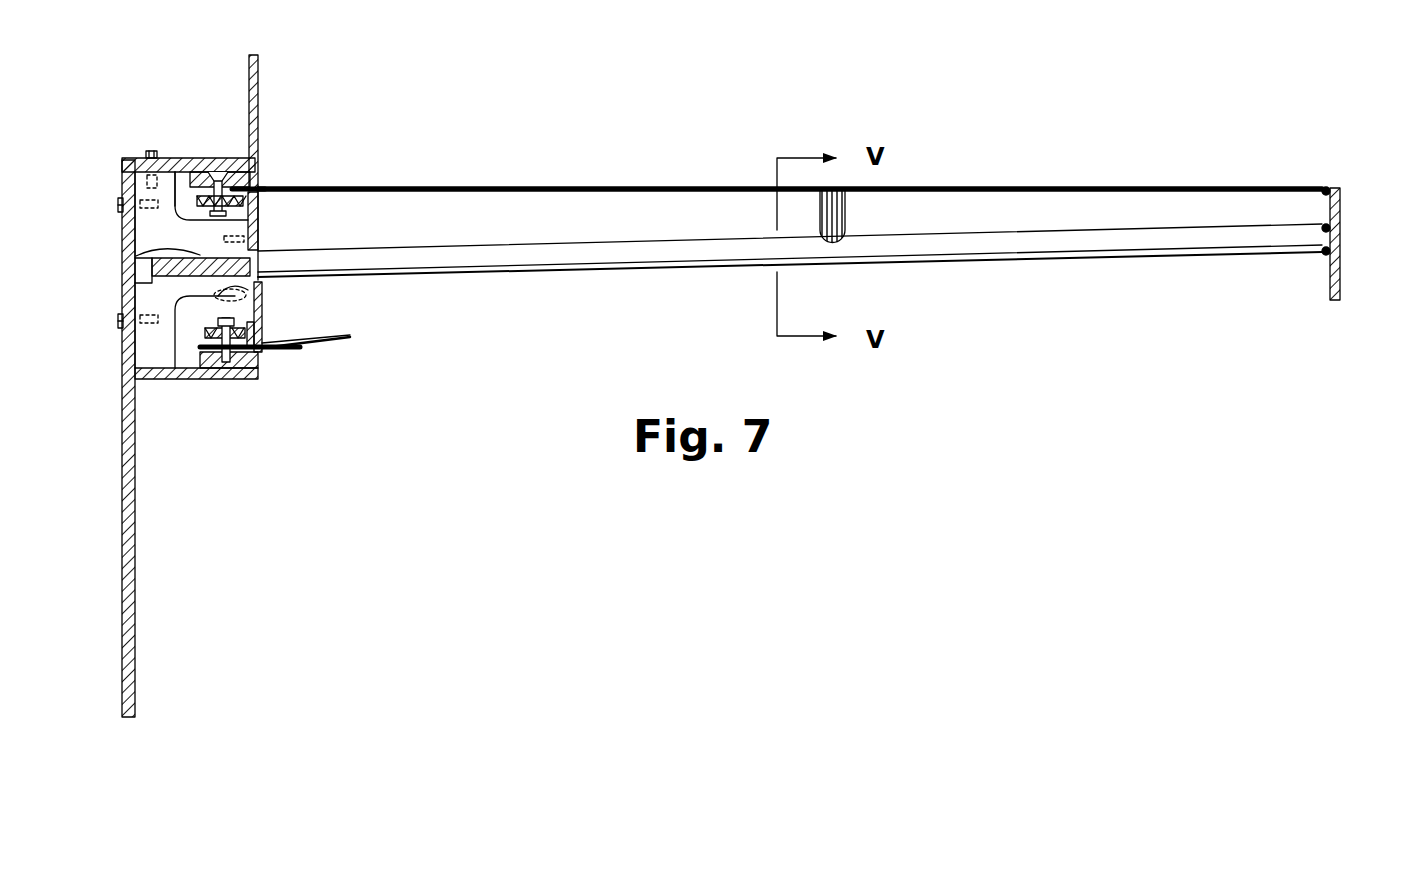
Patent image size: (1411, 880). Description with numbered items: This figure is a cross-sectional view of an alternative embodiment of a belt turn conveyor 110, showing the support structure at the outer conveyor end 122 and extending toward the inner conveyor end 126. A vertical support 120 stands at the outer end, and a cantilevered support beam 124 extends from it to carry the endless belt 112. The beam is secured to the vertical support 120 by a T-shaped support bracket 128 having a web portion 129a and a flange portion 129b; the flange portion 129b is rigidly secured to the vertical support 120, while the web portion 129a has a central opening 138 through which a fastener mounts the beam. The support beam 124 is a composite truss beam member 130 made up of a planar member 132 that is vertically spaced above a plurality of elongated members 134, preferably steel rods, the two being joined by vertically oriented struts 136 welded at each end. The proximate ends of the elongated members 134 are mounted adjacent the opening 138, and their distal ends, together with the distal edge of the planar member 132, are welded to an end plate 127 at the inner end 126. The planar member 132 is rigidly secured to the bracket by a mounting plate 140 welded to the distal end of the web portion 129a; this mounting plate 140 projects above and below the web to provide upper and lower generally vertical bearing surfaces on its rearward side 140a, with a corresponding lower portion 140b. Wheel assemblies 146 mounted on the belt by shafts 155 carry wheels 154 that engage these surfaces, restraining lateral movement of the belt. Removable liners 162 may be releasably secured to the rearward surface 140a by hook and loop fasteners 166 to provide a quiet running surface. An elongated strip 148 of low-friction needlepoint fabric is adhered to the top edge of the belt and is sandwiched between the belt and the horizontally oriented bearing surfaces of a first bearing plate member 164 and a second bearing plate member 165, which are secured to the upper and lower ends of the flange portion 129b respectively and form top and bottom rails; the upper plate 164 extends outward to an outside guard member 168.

The belt turn conveyor 110 is at (440, 80).
The endless belt 112 is at (322, 344).
The vertical support 120 is at (136, 502).
The outer conveyor end 122 is at (118, 160).
The cantilevered support beam 124 is at (481, 216).
The inner conveyor end 126 is at (1342, 236).
The end plate 127 is at (1345, 192).
The support bracket 128 is at (133, 158).
The web portion 129a is at (195, 244).
The flange portion 129b is at (150, 355).
The truss beam member 130 is at (1019, 180).
The planar member 132 is at (1078, 186).
The elongated members 134 is at (1135, 250).
The struts 136 is at (848, 203).
The central opening 138 is at (152, 262).
The mounting plate 140 is at (256, 226).
The rearward side of mounting plate 140a is at (268, 190).
The lower connector arm 140b is at (252, 298).
The wheel assemblies 146 is at (205, 207).
The elongated strip 148 is at (193, 172).
The wheels 154 is at (240, 182).
The shafts 155 is at (220, 172).
The removable liners 162 is at (268, 352).
The first bearing plate member 164 is at (172, 165).
The second bearing plate member 165 is at (172, 374).
The hook and loop fasteners 166 is at (282, 349).
The outside guard member 168 is at (258, 80).